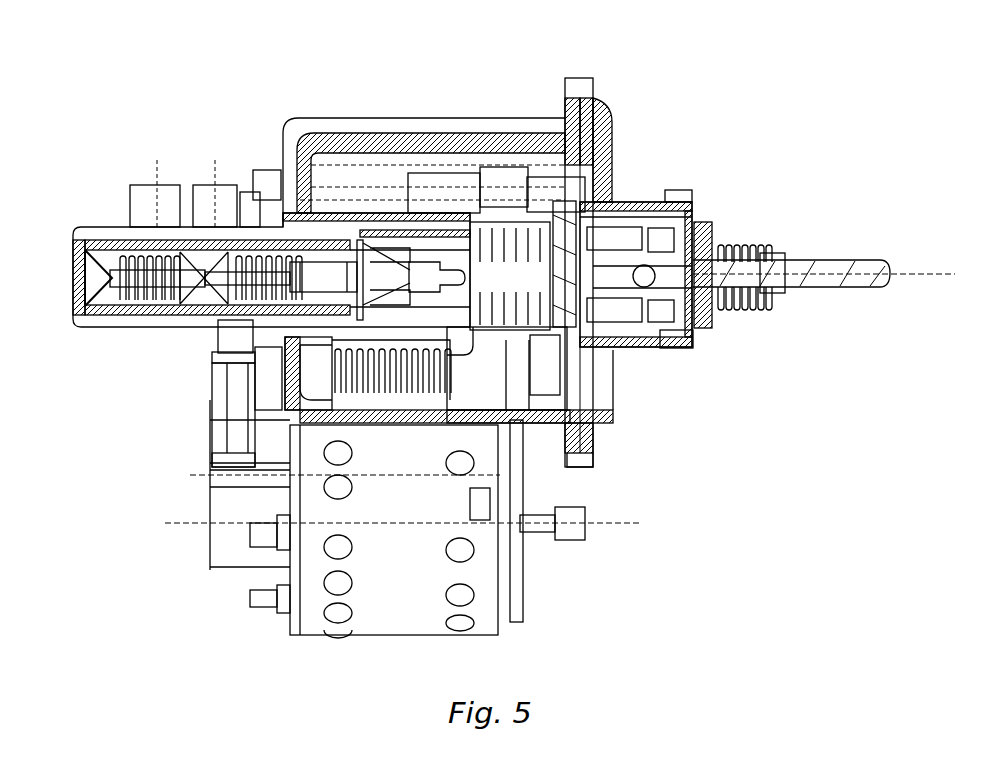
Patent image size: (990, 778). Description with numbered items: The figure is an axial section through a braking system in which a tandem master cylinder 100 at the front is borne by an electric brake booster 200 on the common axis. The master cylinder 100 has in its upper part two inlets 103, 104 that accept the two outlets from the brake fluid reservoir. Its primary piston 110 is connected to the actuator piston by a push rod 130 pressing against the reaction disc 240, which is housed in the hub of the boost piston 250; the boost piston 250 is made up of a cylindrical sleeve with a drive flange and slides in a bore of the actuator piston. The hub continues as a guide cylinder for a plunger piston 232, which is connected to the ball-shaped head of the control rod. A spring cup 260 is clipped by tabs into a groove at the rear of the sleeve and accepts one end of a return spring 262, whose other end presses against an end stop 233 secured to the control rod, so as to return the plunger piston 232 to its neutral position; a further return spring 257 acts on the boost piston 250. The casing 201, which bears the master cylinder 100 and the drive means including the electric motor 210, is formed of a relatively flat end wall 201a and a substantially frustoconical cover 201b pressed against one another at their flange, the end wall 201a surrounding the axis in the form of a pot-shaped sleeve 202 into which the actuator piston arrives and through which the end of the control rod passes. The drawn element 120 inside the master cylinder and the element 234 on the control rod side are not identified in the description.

The master cylinder 100 is at (210, 97).
The inlet 103 is at (215, 186).
The inlet 104 is at (155, 186).
The primary piston 110 is at (278, 314).
The spring 120 is at (172, 322).
The push rod 130 is at (613, 410).
The electric brake booster 200 is at (448, 79).
The casing 201 is at (650, 36).
The end wall 201a is at (619, 125).
The cover 201b is at (512, 132).
The sleeve 202 is at (680, 190).
The electric motor 210 is at (405, 613).
The plunger piston 232 is at (667, 352).
The end stop 233 is at (780, 253).
The shaft 234 is at (840, 288).
The reaction disc 240 is at (610, 353).
The boost piston 250 is at (592, 220).
The return spring 257 is at (457, 290).
The spring cup 260 is at (700, 230).
The return spring 262 is at (712, 256).